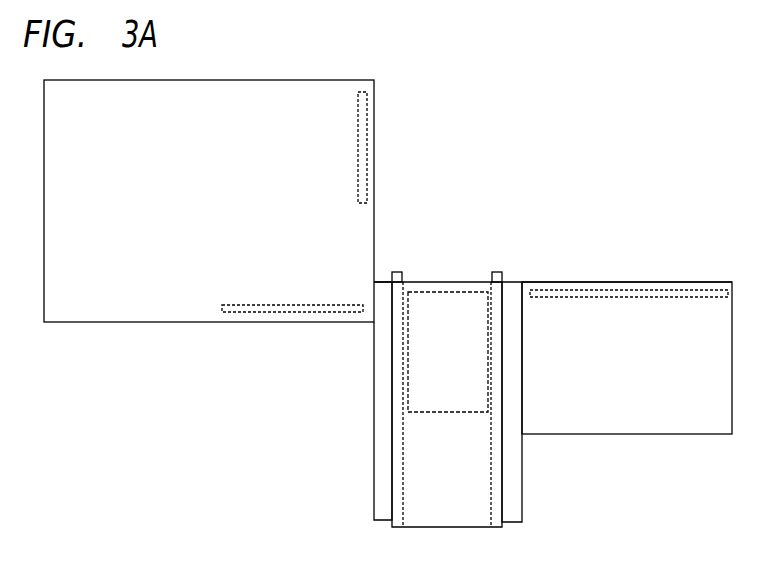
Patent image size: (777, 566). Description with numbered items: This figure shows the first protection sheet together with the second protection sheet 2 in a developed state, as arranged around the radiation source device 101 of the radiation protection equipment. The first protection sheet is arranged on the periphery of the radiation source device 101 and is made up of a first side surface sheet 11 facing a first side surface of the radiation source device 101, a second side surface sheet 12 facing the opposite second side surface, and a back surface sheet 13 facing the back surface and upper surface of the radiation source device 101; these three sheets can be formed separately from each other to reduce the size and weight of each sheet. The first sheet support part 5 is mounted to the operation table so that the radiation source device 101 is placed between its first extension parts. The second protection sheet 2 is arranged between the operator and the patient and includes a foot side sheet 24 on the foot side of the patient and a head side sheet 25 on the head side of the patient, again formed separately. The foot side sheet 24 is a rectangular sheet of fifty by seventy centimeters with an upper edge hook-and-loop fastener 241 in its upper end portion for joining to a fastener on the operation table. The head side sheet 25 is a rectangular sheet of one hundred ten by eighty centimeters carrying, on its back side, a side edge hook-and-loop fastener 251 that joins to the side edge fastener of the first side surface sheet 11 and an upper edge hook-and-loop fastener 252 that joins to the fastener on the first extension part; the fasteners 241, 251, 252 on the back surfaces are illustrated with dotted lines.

The second protection sheet 2 is at (557, 224).
The first sheet support part 5 is at (402, 274).
The first side surface sheet 11 is at (380, 443).
The second side surface sheet 12 is at (515, 443).
The back surface sheet 13 is at (456, 518).
The foot side sheet 24 is at (637, 371).
The head side sheet 25 is at (219, 210).
The radiation source device 101 is at (462, 363).
The upper edge hook-and-loop fastener 241 is at (677, 292).
The side edge hook-and-loop fastener 251 is at (295, 308).
The upper edge hook-and-loop fastener 252 is at (365, 145).